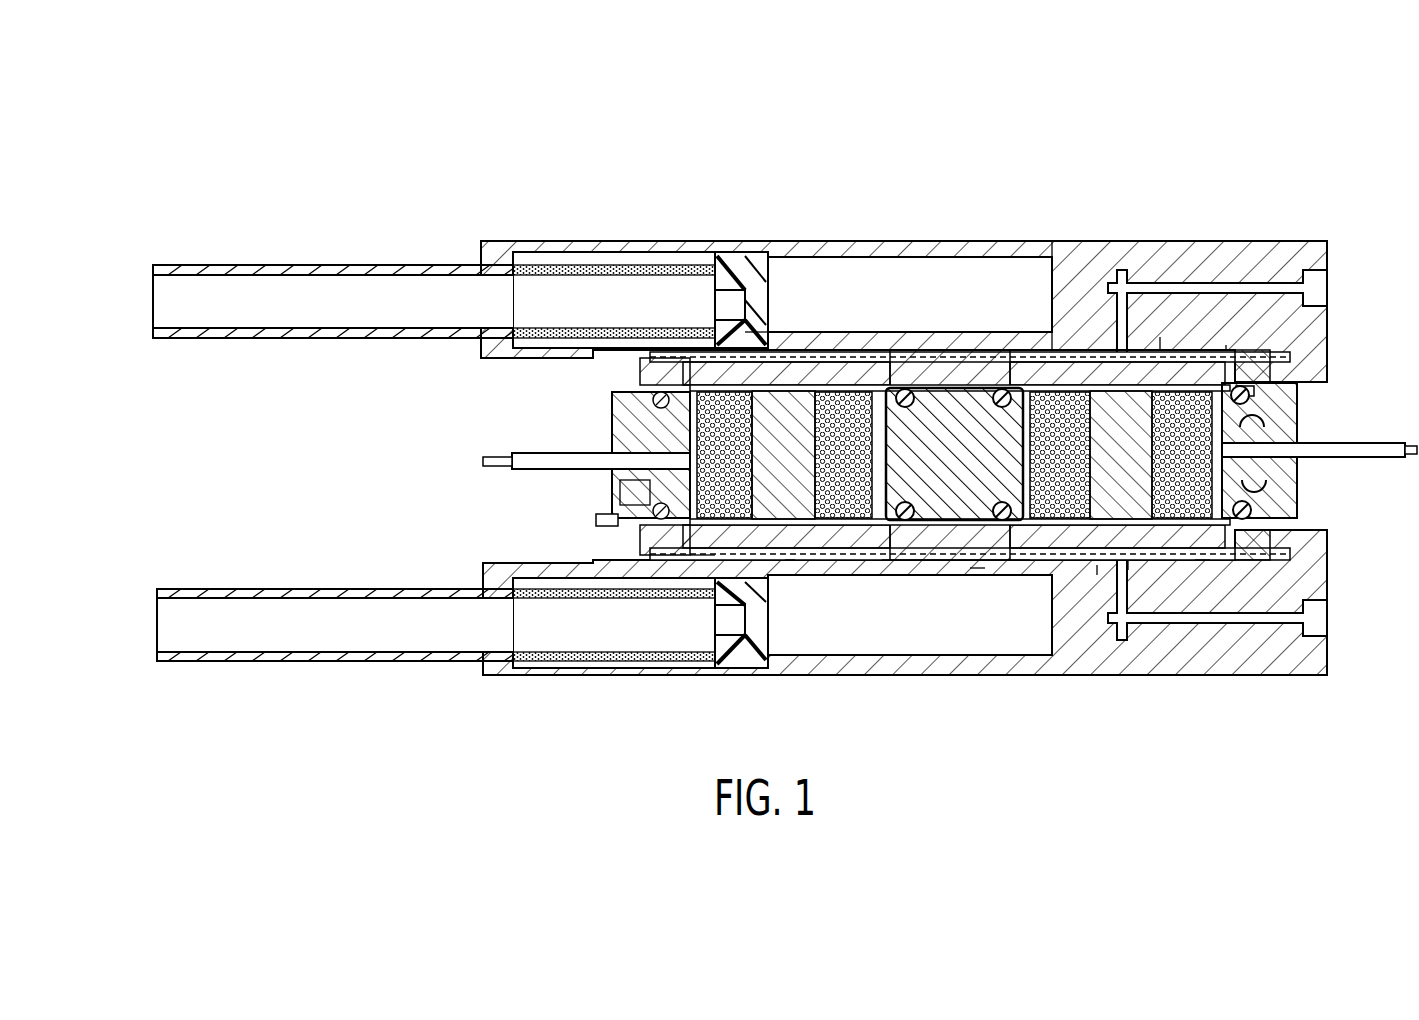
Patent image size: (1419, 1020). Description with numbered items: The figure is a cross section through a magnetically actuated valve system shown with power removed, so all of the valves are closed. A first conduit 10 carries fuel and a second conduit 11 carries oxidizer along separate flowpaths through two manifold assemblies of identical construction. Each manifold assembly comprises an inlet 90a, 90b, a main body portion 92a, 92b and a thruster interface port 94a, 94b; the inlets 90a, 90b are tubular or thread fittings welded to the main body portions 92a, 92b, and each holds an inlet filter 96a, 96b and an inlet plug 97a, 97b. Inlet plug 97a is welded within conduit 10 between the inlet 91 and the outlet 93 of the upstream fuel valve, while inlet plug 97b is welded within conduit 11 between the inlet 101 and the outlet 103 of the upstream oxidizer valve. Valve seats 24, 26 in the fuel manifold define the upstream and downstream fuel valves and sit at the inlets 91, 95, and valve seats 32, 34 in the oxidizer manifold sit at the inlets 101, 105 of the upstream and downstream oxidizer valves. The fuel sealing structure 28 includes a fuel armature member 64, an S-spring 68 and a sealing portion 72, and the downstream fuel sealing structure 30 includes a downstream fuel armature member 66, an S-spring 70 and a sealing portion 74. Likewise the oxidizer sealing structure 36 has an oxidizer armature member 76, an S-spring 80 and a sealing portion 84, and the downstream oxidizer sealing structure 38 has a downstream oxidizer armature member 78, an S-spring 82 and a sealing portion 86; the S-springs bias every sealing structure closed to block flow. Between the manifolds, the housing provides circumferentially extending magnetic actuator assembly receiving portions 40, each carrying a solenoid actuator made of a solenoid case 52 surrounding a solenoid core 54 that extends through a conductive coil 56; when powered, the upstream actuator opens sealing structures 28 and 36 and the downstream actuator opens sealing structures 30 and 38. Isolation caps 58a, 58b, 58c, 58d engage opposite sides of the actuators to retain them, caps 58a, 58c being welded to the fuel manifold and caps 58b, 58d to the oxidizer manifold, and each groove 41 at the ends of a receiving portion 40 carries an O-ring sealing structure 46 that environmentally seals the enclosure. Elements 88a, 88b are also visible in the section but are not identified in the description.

The first conduit 10 is at (292, 312).
The second conduit 11 is at (330, 610).
The inlet 90a is at (153, 300).
The inlet 90b is at (157, 618).
The inlet filter 96a is at (575, 265).
The inlet filter 96b is at (640, 657).
The inlet plug 97a is at (735, 262).
The inlet plug 97b is at (748, 650).
The outlet of the upstream fuel valve 93 is at (806, 330).
The main body portion 92a is at (935, 248).
The main body portion 92b is at (917, 665).
The solenoid core 54 is at (1098, 392).
The valve seat 26 is at (1160, 336).
The fuel sealing structure 30 is at (1226, 345).
The S-spring 70 is at (1292, 240).
The thruster interface port 94a is at (1330, 284).
The thruster interface port 94b is at (1330, 618).
The diaphragm plate 88a is at (660, 362).
The diaphragm plate 88b is at (640, 353).
The inlet of the upstream fuel valve 91 is at (680, 352).
The valve seat 24 is at (745, 332).
The fuel sealing structure 28 is at (820, 348).
The S-spring 68 is at (882, 352).
The fuel armature member 64 is at (878, 366).
The downstream fuel armature member 66 is at (1025, 348).
The inlet of the downstream fuel valve 95 is at (1028, 350).
The isolation cap 58a is at (642, 363).
The isolation cap 58b is at (650, 562).
The isolation cap 58c is at (1270, 372).
The isolation cap 58d is at (1255, 527).
The solenoid case 52 is at (690, 428).
The conductive coil 56 is at (690, 480).
The groove 41 is at (620, 495).
The sealing structure 46 is at (600, 520).
The sealing portion 72 is at (808, 386).
The sealing portion 84 is at (820, 530).
The sealing portion 74 is at (1090, 326).
The magnetic actuator assembly receiving portion 40 is at (1275, 460).
The inlet of the upstream oxidizer valve 101 is at (690, 557).
The oxidizer sealing structure 36 is at (810, 572).
The oxidizer armature member 76 is at (865, 565).
The S-spring 80 is at (882, 562).
The downstream oxidizer armature member 78 is at (1020, 565).
The sealing portion 86 is at (1062, 587).
The oxidizer sealing structure 38 is at (1097, 570).
The valve seat 32 is at (788, 580).
The outlet of the upstream oxidizer valve 103 is at (795, 600).
The inlet of the downstream oxidizer valve 105 is at (975, 568).
The valve seat 34 is at (1128, 565).
The S-spring 82 is at (1202, 568).